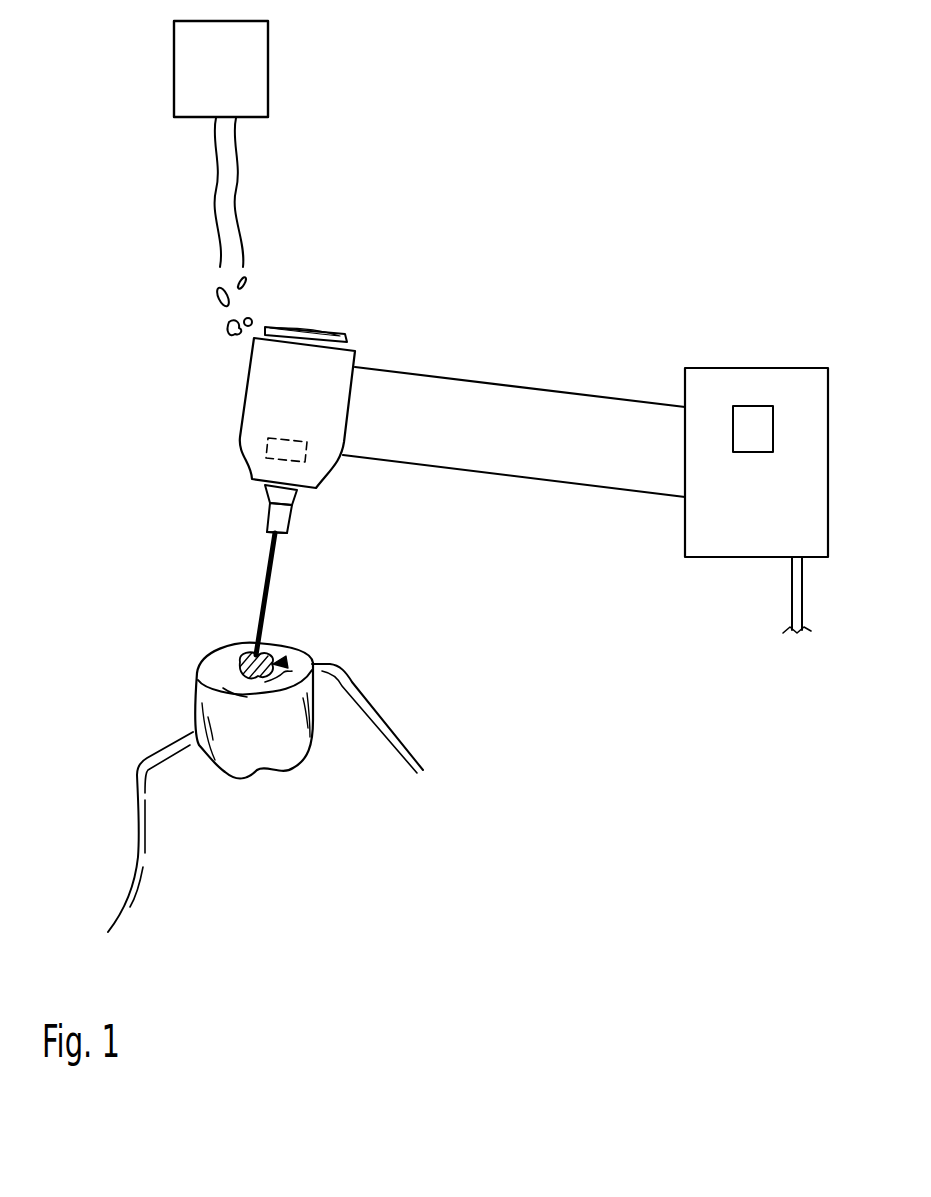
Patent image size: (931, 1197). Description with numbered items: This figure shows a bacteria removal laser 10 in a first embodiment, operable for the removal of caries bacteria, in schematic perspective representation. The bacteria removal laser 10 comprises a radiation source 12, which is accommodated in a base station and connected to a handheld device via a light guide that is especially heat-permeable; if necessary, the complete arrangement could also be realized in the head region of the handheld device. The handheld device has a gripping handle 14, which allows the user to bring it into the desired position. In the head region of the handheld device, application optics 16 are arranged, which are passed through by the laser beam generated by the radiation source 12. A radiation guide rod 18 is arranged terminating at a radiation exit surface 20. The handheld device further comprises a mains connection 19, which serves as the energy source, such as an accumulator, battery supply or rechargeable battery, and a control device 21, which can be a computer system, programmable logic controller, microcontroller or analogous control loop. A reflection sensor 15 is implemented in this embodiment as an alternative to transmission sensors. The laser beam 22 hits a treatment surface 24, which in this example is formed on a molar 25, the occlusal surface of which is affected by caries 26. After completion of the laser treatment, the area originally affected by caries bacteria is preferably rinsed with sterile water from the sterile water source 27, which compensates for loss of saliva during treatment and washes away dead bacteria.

The bacteria removal laser 10 is at (500, 224).
The radiation source 12 is at (263, 409).
The gripping handle 14 is at (530, 455).
The reflection sensor 15 is at (312, 462).
The application optics 16 is at (298, 497).
The radiation guide rod 18 is at (272, 517).
The mains connection 19 is at (790, 615).
The radiation exit surface 20 is at (272, 540).
The control device 21 is at (753, 418).
The laser beam 22 is at (213, 580).
The treatment surface 24 is at (284, 661).
The molar 25 is at (270, 752).
The caries 26 is at (237, 665).
The sterile water source 27 is at (188, 60).